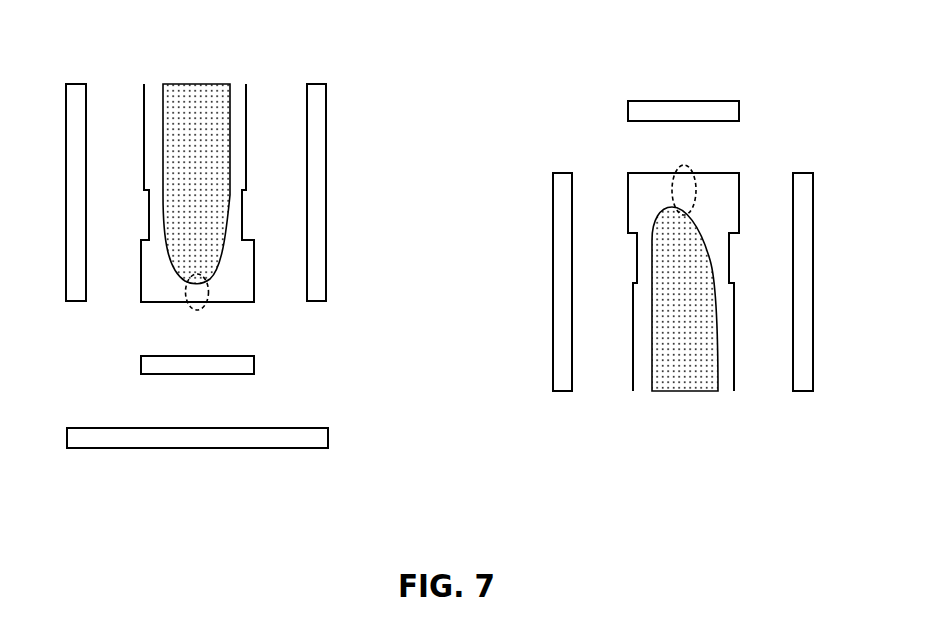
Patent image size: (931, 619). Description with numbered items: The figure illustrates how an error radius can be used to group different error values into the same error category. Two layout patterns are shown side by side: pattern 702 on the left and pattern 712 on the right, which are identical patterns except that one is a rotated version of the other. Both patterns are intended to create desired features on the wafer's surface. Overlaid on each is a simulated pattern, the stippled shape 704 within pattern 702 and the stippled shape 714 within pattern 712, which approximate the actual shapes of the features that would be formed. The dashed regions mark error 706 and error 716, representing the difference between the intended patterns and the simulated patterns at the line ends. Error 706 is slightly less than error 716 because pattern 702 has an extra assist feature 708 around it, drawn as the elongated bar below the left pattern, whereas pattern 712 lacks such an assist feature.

The pattern 702 is at (248, 101).
The simulated pattern 704 is at (196, 170).
The error 706 is at (213, 292).
The assist feature 708 is at (197, 469).
The pattern 712 is at (741, 180).
The simulated pattern 714 is at (685, 312).
The error 716 is at (672, 182).